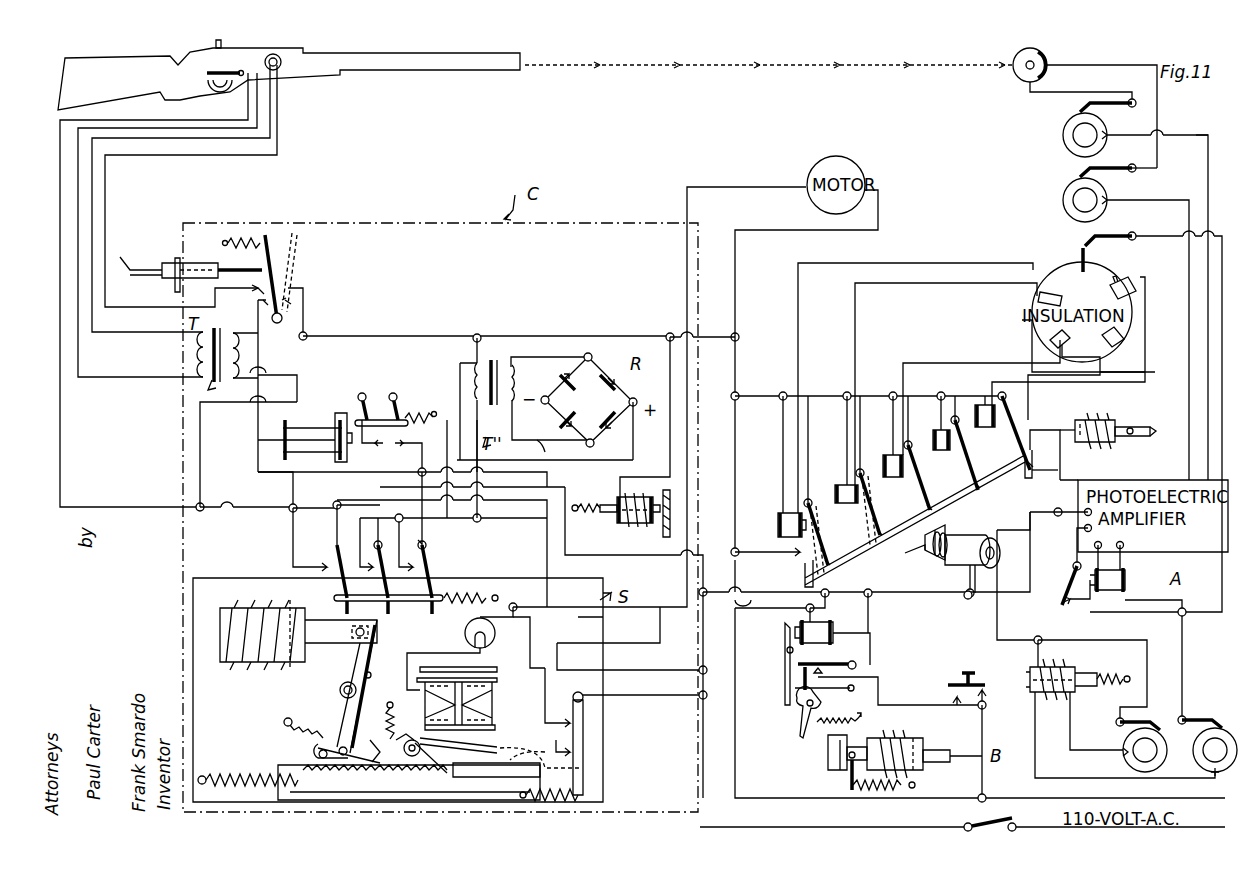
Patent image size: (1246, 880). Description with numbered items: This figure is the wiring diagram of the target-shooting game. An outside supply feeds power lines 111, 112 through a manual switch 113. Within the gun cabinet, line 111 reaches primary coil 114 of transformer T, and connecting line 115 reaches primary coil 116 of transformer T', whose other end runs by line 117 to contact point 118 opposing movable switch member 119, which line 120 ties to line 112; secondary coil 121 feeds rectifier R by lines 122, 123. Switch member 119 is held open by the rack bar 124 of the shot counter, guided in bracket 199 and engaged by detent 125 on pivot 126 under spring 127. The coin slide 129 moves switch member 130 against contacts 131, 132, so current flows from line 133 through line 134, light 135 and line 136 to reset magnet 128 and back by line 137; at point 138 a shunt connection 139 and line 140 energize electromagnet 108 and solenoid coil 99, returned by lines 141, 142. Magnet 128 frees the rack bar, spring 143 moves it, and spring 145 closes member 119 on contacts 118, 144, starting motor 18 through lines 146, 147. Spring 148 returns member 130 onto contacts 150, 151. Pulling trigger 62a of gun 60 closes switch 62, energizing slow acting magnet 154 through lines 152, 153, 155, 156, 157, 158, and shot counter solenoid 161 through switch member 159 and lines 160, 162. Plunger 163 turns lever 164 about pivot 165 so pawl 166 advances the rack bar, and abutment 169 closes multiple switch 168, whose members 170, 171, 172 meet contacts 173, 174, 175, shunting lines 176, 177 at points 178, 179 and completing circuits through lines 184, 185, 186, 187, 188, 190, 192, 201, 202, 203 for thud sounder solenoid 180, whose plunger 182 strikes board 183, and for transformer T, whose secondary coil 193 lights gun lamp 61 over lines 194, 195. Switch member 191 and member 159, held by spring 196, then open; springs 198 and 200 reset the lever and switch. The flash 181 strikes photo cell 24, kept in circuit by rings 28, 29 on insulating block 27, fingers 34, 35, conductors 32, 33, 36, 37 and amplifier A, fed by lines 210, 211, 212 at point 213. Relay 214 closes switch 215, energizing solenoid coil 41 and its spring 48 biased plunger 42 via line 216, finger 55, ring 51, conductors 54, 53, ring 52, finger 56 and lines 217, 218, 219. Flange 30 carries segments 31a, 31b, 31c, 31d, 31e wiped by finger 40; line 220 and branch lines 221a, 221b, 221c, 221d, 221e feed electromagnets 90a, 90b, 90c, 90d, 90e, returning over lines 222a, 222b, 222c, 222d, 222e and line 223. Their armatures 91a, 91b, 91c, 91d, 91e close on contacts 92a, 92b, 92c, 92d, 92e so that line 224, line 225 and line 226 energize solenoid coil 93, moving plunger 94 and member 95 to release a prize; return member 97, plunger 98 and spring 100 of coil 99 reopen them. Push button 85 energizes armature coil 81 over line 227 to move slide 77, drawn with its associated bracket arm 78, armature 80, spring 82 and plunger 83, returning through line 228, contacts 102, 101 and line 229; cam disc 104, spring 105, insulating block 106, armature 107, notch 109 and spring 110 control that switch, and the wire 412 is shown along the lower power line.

The motor 18 is at (844, 167).
The photo cell 24 is at (1014, 54).
The insulating block 27 is at (1084, 282).
The conductive ring 28 is at (1060, 138).
The conductive ring 29 is at (1060, 202).
The enlarged flange 30 is at (1114, 261).
The segmental contact 31a is at (1136, 296).
The segmental contact 31b is at (1102, 336).
The segmental contact 31c is at (1047, 340).
The segmental contact 31d is at (1030, 296).
The segmental contact 31e is at (1078, 242).
The conductor 32 is at (1028, 94).
The conductor 33 is at (1086, 56).
The spring finger 34 is at (1102, 104).
The spring finger 35 is at (1112, 170).
The conductor 36 is at (1184, 480).
The conductor 37 is at (1182, 134).
The spring finger 40 is at (1095, 240).
The solenoid coil 41 is at (1052, 667).
The plunger 42 is at (1089, 675).
The spring 48 is at (1116, 671).
The contact ring 51 is at (1124, 762).
The contact ring 52 is at (1202, 762).
The conductor 53 is at (1049, 776).
The conductor 54 is at (1070, 706).
The spring finger 55 is at (1120, 724).
The spring finger 56 is at (1194, 716).
The gun 60 is at (348, 68).
The electric light source 61 is at (283, 70).
The trigger switch 62 is at (219, 61).
The trigger 62a is at (218, 92).
The slide 77 is at (832, 760).
The bracket arm 78 is at (842, 772).
The armature 80 is at (856, 742).
The armature coil 81 is at (884, 738).
The spring 82 is at (906, 774).
The plunger 83 is at (934, 744).
The hand controlled switch 85 is at (967, 673).
The electromagnet 90a is at (978, 404).
The electromagnet 90b is at (933, 430).
The electromagnet 90c is at (884, 454).
The electromagnet 90d is at (835, 485).
The electromagnet 90e is at (777, 515).
The armature 91a is at (998, 448).
The armature 91b is at (973, 456).
The armature 91c is at (917, 497).
The armature 91d is at (873, 497).
The armature 91e is at (841, 544).
The switch contact 92a is at (980, 446).
The switch contact 92b is at (953, 477).
The switch contact 92c is at (913, 498).
The switch contact 92d is at (870, 527).
The switch contact 92e is at (805, 556).
The solenoid coil 93 is at (1098, 411).
The solenoid plunger 94 is at (1122, 424).
The release member 95 is at (1134, 438).
The return member 97 is at (909, 543).
The plunger 98 is at (950, 539).
The solenoid coil 99 is at (985, 539).
The spring 100 is at (943, 555).
The switch contact 101 is at (843, 658).
The switch contact 102 is at (857, 664).
The cam disc 104 is at (790, 688).
The spring 105 is at (834, 689).
The insulating block 106 is at (788, 672).
The armature 107 is at (786, 653).
The electromagnet 108 is at (828, 631).
The notch 109 is at (798, 705).
The spring 110 is at (843, 710).
The power line 111 is at (1095, 790).
The power line 112 is at (1096, 834).
The manually controlled switch 113 is at (978, 811).
The primary coil 114 is at (225, 368).
The connecting line 115 is at (467, 348).
The primary coil 116 is at (458, 367).
The line 117 is at (550, 549).
The contact point 118 is at (570, 723).
The movable switch member 119 is at (535, 742).
The line 120 is at (612, 700).
The secondary coil 121 is at (580, 400).
The line 122 is at (510, 357).
The line 123 is at (512, 440).
The rack bar 124 is at (455, 782).
The detent 125 is at (415, 748).
The pivot 126 is at (413, 724).
The spring 127 is at (379, 720).
The reset magnet 128 is at (494, 700).
The coin slide 129 is at (146, 266).
The switch member 130 is at (296, 248).
The switch contact 131 is at (290, 276).
The switch contact 132 is at (292, 300).
The line 133 is at (304, 307).
The line 134 is at (292, 335).
The light 135 is at (468, 630).
The line 136 is at (405, 660).
The line 137 is at (618, 666).
The connection point 138 is at (515, 605).
The shunt connection 139 is at (552, 610).
The line 140 is at (898, 607).
The line 141 is at (826, 602).
The line 142 is at (968, 585).
The spring 143 is at (237, 772).
The contact point 144 is at (564, 697).
The spring 145 is at (556, 798).
The line 146 is at (626, 644).
The line 147 is at (736, 288).
The spring 148 is at (241, 233).
The contact member 150 is at (256, 290).
The contact member 151 is at (260, 303).
The line 152 is at (633, 430).
The line 153 is at (357, 409).
The slow acting magnet 154 is at (308, 412).
The line 155 is at (148, 432).
The line 156 is at (112, 507).
The line 157 is at (106, 195).
The line 158 is at (546, 452).
The switch member 159 is at (384, 399).
The line 160 is at (335, 458).
The shot counter solenoid 161 is at (276, 595).
The line 162 is at (287, 551).
The plunger 163 is at (330, 640).
The lever 164 is at (340, 698).
The pivot 165 is at (340, 684).
The pawl 166 is at (358, 746).
The multiple switch 168 is at (402, 608).
The abutment 169 is at (353, 608).
The movable switch member 170 is at (346, 605).
The movable switch member 171 is at (360, 627).
The movable switch member 172 is at (417, 587).
The switch contact 173 is at (324, 576).
The switch contact 174 is at (368, 574).
The switch contact 175 is at (410, 575).
The line 176 is at (350, 518).
The line 177 is at (368, 522).
The intersecting point 178 is at (288, 506).
The intersecting point 179 is at (340, 502).
The thud sounder solenoid 180 is at (634, 492).
The arrows 181 is at (614, 66).
The movable plunger 182 is at (608, 498).
The board 183 is at (660, 537).
The line 184 is at (672, 378).
The line 185 is at (603, 472).
The line 186 is at (426, 552).
The line 187 is at (404, 550).
The line 188 is at (457, 520).
The line 190 is at (278, 378).
The movable switch member 191 is at (395, 412).
The line 192 is at (422, 449).
The secondary coil 193 is at (198, 348).
The line 194 is at (109, 394).
The line 195 is at (112, 350).
The spring 196 is at (414, 412).
The spring 198 is at (286, 728).
The guiding bracket 199 is at (320, 796).
The spring 200 is at (456, 589).
The intersecting point 201 is at (481, 520).
The line 202 is at (362, 552).
The line 203 is at (594, 534).
The line 210 is at (980, 762).
The line 211 is at (1060, 598).
The line 212 is at (1067, 526).
The intersection point 213 is at (1056, 511).
The photoelectric relay 214 is at (1122, 589).
The photoelectric switch 215 is at (1063, 612).
The line 216 is at (1087, 640).
The line 217 is at (1184, 654).
The line 218 is at (1134, 613).
The line 219 is at (1066, 564).
The line 220 is at (760, 395).
The branch line 221a is at (978, 415).
The branch line 221b is at (935, 386).
The branch line 221c is at (890, 419).
The branch line 221d is at (839, 423).
The branch line 221e is at (782, 418).
The line 222a is at (1160, 334).
The line 222b is at (1044, 357).
The line 222c is at (958, 352).
The line 222d is at (859, 320).
The line 222e is at (798, 310).
The line 223 is at (1197, 614).
The line 224 is at (773, 554).
The line 225 is at (1052, 420).
The line 226 is at (1068, 468).
The line 227 is at (938, 698).
The line 228 is at (880, 683).
The line 229 is at (858, 628).
The wire 412 is at (1001, 594).